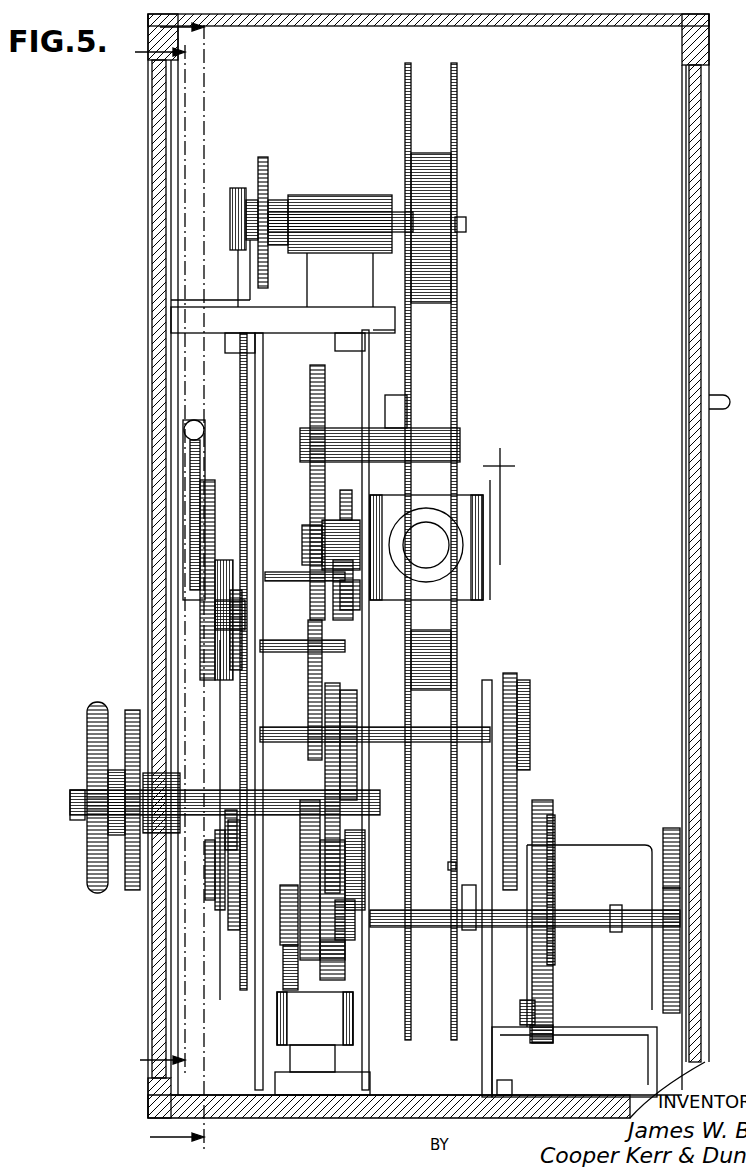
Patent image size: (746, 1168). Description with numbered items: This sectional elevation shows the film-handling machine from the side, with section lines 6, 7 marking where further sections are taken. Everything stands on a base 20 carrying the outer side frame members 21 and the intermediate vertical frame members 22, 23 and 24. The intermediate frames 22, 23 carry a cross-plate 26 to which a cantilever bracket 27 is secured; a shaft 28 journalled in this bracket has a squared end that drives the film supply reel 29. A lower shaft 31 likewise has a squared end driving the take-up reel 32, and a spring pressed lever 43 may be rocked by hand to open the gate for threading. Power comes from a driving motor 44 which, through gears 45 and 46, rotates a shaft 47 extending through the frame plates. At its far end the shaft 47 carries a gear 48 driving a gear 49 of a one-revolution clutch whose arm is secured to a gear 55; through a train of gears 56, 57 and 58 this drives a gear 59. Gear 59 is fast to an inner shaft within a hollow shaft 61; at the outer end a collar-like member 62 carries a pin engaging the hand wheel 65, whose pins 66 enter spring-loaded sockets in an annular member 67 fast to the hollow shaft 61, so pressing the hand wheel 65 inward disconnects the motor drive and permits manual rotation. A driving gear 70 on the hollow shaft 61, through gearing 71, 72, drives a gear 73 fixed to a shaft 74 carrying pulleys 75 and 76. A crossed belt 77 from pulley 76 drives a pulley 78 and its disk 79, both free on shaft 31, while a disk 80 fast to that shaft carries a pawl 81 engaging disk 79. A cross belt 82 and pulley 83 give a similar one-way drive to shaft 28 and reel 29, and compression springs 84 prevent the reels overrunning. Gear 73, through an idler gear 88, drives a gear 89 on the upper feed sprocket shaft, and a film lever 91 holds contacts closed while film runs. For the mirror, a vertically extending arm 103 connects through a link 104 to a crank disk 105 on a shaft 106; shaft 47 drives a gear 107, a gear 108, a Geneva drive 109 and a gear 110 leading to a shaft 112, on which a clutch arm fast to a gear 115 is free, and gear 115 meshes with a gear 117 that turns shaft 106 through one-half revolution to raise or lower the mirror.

The section line 6- 6 is at (184, 584).
The section line 7- 7 is at (167, 557).
The base 20 is at (395, 1120).
The outer side frame members 21 is at (150, 483).
The intermediate vertical frame member 22 is at (262, 445).
The intermediate vertical frame member 23 is at (368, 358).
The intermediate vertical frame member 24 is at (500, 1063).
The cross-plate 26 is at (316, 322).
The cantilever bracket 27 is at (340, 251).
The shaft 28 is at (460, 218).
The film supply reel 29 is at (458, 128).
The shaft 31 is at (453, 860).
The take-up reel 32 is at (440, 760).
The spring pressed lever 43 is at (503, 488).
The driving motor 44 is at (589, 936).
The gear 45 is at (662, 838).
The gear 46 is at (662, 903).
The shaft 47 is at (463, 930).
The gear 48 is at (282, 935).
The gear 49 is at (285, 975).
The gear 55 is at (322, 1043).
The gear 56 is at (348, 962).
The gear 57 is at (355, 925).
The gear 58 is at (355, 852).
The gear 59 is at (358, 800).
The hollow shaft 61 is at (195, 800).
The collar-like member 62 is at (75, 800).
The hand wheel 65 is at (90, 888).
The pins 66 is at (118, 892).
The annular member 67 is at (128, 712).
The driving gear 70 is at (310, 880).
The gearing 71 is at (350, 712).
The gearing 72 is at (312, 748).
The gear 73 is at (308, 680).
The shaft 74 is at (295, 648).
The pulley 75 is at (243, 680).
The pulley 76 is at (205, 685).
The belt 77 is at (218, 736).
The pulley 78 is at (207, 890).
The disk 79 is at (222, 905).
The disk 80 is at (235, 930).
The pawl 81 is at (228, 808).
The cross belt 82 is at (240, 392).
The pulley 83 is at (240, 190).
The compression springs 84 is at (272, 205).
The idler gear 88 is at (302, 545).
The gear 89 is at (310, 420).
The film lever 91 is at (410, 422).
The vertically extending arm 103 is at (185, 452).
The link 104 is at (198, 505).
The crank disk 105 is at (210, 540).
The shaft 106 is at (282, 572).
The gear 107 is at (556, 960).
The gear 108 is at (555, 1000).
The Geneva drive 109 is at (545, 1043).
The gear 110 is at (522, 783).
The shaft 112 is at (503, 690).
The gear 115 is at (342, 694).
The gear 117 is at (355, 603).